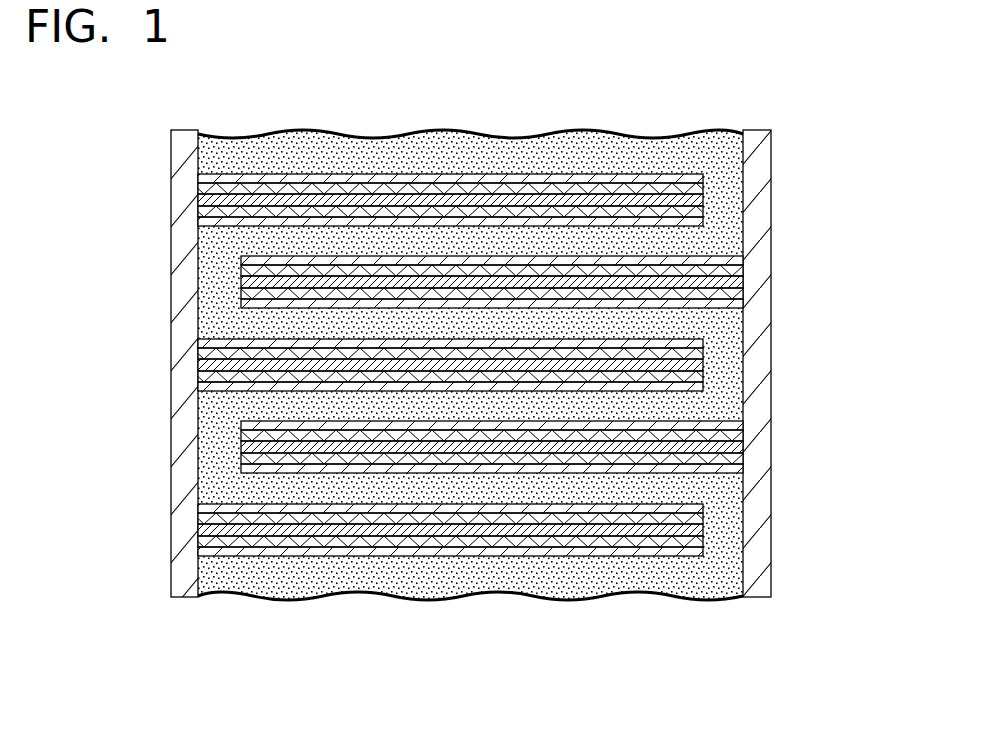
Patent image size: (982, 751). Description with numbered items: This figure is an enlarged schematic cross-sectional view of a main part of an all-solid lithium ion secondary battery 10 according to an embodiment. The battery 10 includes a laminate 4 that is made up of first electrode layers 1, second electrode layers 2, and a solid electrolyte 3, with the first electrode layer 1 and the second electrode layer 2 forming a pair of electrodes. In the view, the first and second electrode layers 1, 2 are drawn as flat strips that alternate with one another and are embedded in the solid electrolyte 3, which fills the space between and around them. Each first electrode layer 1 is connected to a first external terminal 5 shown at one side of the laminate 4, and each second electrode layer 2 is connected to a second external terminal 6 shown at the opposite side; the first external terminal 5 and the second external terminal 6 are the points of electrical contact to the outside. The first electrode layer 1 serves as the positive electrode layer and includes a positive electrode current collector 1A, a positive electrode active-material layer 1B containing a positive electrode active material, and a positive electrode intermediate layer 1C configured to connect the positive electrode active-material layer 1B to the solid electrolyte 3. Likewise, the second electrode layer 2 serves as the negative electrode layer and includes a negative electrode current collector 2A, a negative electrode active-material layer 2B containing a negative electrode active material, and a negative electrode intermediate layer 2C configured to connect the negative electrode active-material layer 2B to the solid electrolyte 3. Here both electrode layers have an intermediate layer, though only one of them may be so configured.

The all-solid lithium ion secondary battery 10 is at (476, 313).
The first electrode layer 1 is at (371, 336).
The positive electrode current collector 1A is at (203, 200).
The positive electrode active-material layer 1B is at (203, 188).
The positive electrode intermediate layer 1C is at (203, 178).
The second electrode layer 2 is at (576, 338).
The negative electrode current collector 2A is at (743, 282).
The negative electrode active-material layer 2B is at (743, 270).
The negative electrode intermediate layer 2C is at (743, 259).
The solid electrolyte 3 is at (718, 323).
The laminate 4 is at (745, 212).
The first external terminal 5 is at (188, 324).
The second external terminal 6 is at (756, 540).